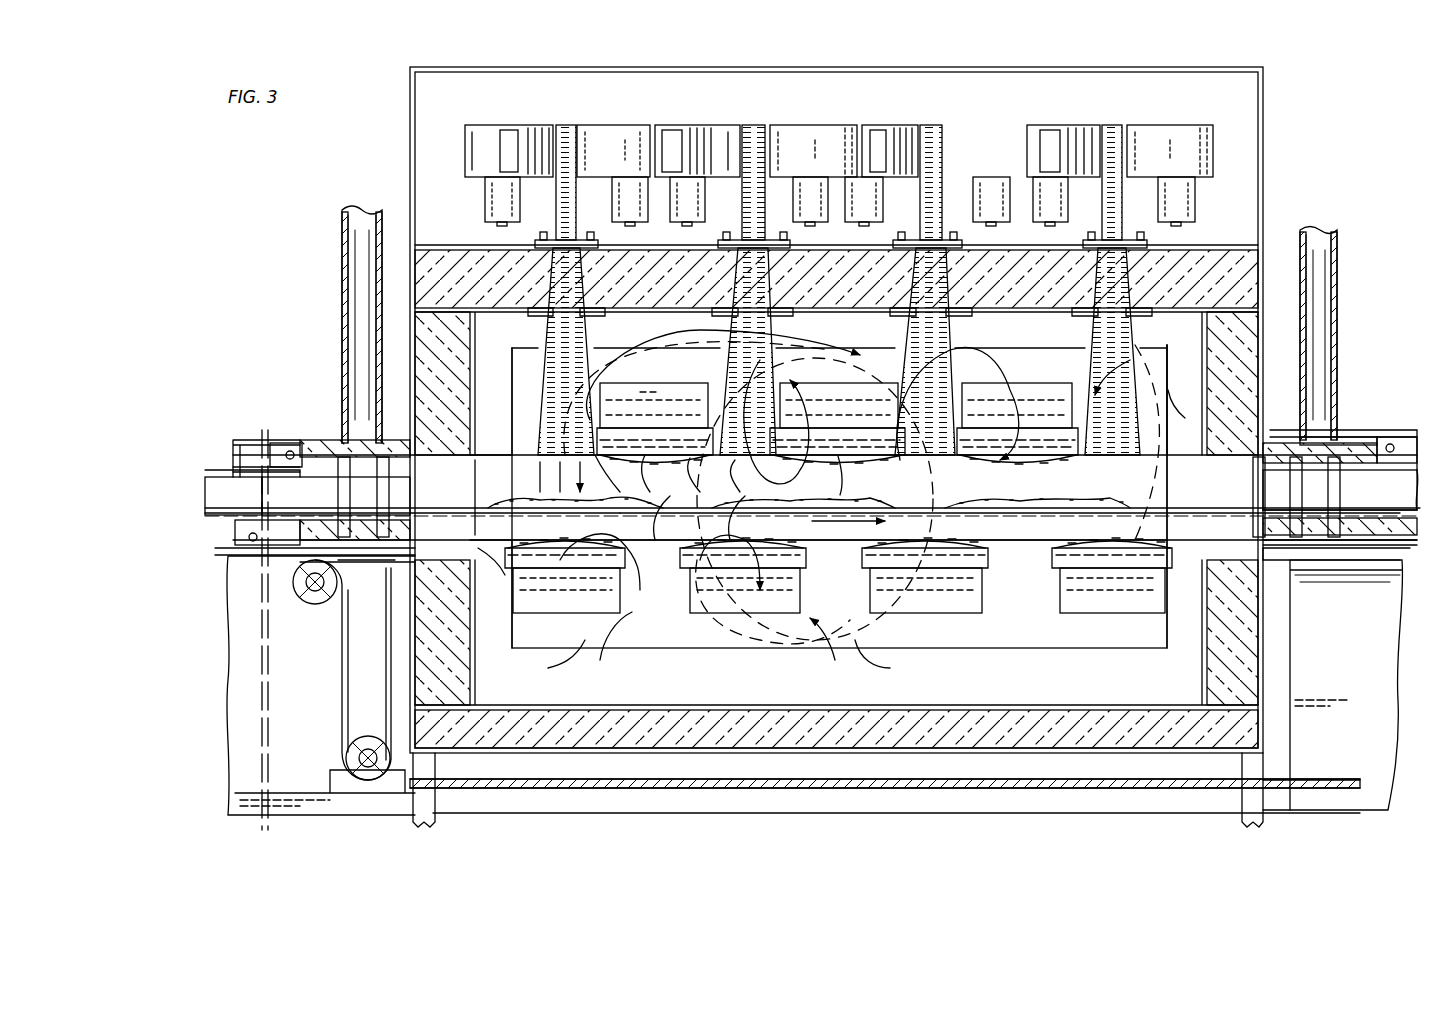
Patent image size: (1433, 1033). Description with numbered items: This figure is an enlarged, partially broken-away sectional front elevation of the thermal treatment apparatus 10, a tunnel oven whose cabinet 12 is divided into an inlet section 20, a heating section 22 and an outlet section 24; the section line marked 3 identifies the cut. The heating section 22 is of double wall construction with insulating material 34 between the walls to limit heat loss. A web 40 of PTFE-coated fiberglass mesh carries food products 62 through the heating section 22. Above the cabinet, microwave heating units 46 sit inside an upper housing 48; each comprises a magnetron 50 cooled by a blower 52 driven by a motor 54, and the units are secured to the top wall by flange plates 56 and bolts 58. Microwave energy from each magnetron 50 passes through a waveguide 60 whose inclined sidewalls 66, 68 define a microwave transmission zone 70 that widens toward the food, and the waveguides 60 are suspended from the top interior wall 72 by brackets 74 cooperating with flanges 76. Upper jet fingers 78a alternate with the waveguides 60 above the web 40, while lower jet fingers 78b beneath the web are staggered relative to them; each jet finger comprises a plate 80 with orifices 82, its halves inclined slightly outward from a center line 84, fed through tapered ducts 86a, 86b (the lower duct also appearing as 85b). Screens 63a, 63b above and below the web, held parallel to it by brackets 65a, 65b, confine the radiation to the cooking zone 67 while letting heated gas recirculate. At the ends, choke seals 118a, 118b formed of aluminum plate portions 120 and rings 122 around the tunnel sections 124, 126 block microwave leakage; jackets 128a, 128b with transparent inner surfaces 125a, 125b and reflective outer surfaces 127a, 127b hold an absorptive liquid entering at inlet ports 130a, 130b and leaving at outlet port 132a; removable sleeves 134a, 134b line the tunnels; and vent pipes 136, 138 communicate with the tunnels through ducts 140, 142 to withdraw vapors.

The thermal treatment apparatus 10 is at (1338, 106).
The cabinet 12 is at (402, 283).
The inlet section 20 is at (256, 343).
The heating section 22 is at (840, 683).
The outlet section 24 is at (1358, 378).
The insulating material 34 is at (498, 290).
The web 40 is at (1165, 508).
The microwave heating units 46 is at (577, 118).
The upper housing 48 is at (410, 115).
The magnetron 50 is at (528, 127).
The blower 52 is at (650, 128).
The motor 54 is at (485, 194).
The flange plates 56 is at (537, 242).
The bolts 58 is at (596, 241).
The waveguides 60 is at (775, 342).
The food products 62 is at (504, 500).
The upper screen 63a is at (490, 448).
The lower screen 63b is at (490, 580).
The upper screen bracket 65a is at (1190, 440).
The lower screen bracket 65b is at (475, 572).
The waveguide sidewall 66 is at (905, 337).
The cooking zone 67 is at (1143, 477).
The waveguide sidewall 68 is at (587, 345).
The microwave transmission zone 70 is at (1125, 385).
The top interior wall 72 is at (658, 308).
The brackets 74 is at (985, 316).
The flanges 76 is at (935, 308).
The upper jet fingers 78a is at (640, 382).
The lower jet fingers 78b is at (622, 604).
The plate 80 is at (1043, 462).
The orifices 82 is at (838, 456).
The center line 84 is at (845, 458).
The lower heating element 85b is at (1142, 593).
The upper tapered duct 86a is at (648, 416).
The lower tapered duct 86b is at (592, 593).
The inlet choke seal 118a is at (355, 505).
The outlet choke seal 118b is at (1340, 502).
The aluminum plate portions 120 is at (388, 390).
The rings 122 is at (395, 490).
The inlet tunnel section 124 is at (250, 501).
The inlet jacket inner surface 125a is at (255, 445).
The outlet jacket inner surface 125b is at (1380, 440).
The outlet tunnel section 126 is at (1340, 565).
The inlet jacket outer surface 127a is at (252, 440).
The outlet jacket outer surface 127b is at (1397, 545).
The inlet jacket 128a is at (288, 440).
The outlet jacket 128b is at (1390, 438).
The inlet jacket inlet port 130a is at (292, 452).
The outlet jacket inlet port 130b is at (1392, 445).
The inlet jacket outlet port 132a is at (245, 548).
The inlet removable sleeve 134a is at (212, 470).
The outlet removable sleeve 134b is at (1388, 515).
The inlet vent pipe 136 is at (345, 218).
The outlet vent pipe 138 is at (1340, 243).
The inlet duct 140 is at (452, 405).
The outlet duct 142 is at (1340, 443).
The section line 3 is at (1424, 406).